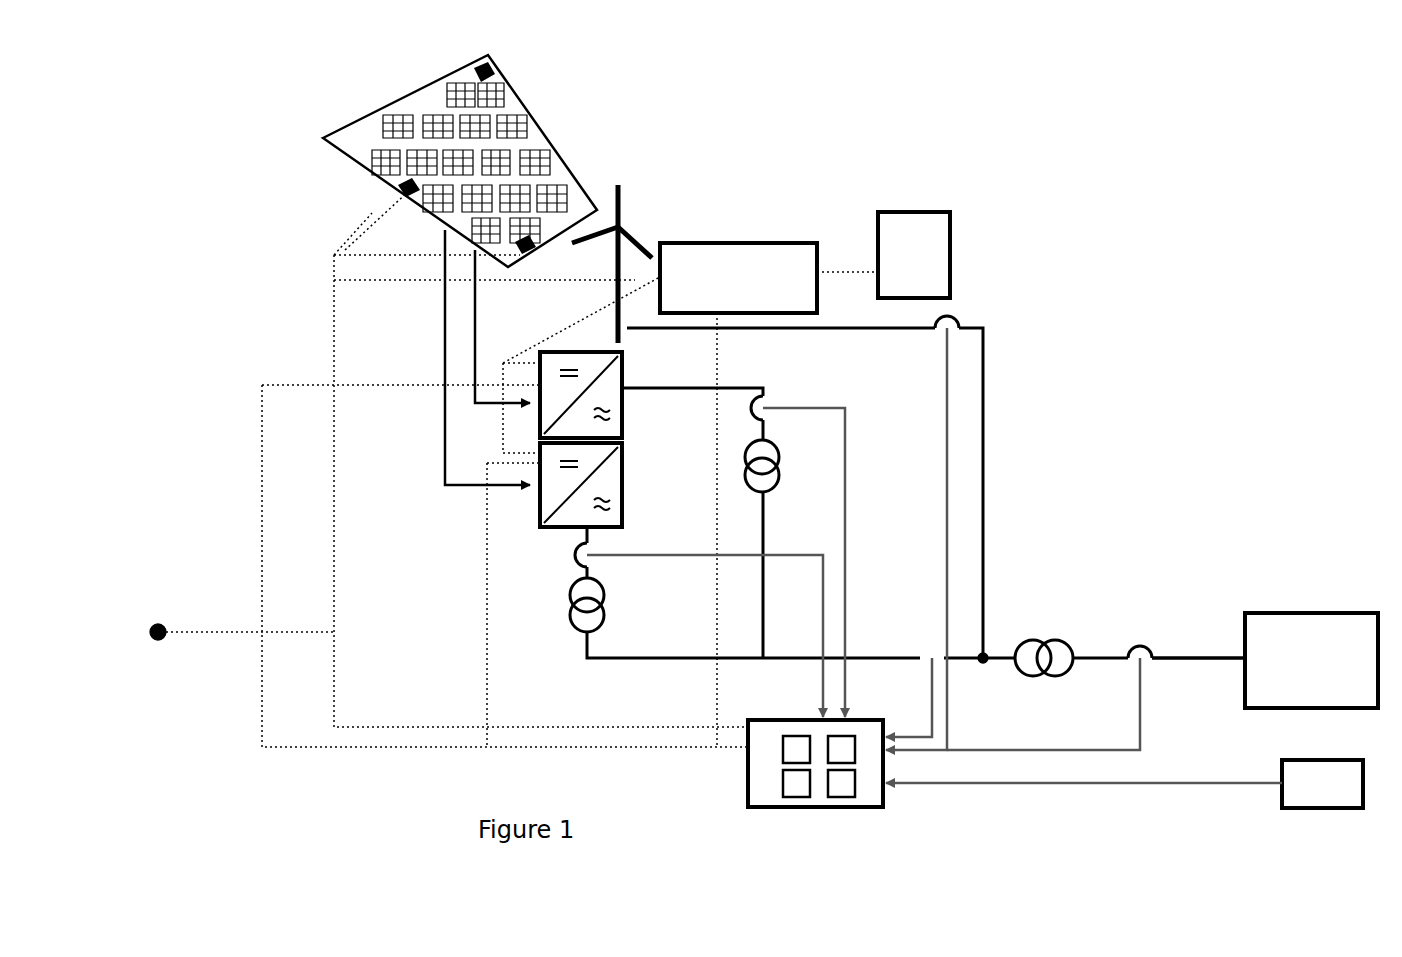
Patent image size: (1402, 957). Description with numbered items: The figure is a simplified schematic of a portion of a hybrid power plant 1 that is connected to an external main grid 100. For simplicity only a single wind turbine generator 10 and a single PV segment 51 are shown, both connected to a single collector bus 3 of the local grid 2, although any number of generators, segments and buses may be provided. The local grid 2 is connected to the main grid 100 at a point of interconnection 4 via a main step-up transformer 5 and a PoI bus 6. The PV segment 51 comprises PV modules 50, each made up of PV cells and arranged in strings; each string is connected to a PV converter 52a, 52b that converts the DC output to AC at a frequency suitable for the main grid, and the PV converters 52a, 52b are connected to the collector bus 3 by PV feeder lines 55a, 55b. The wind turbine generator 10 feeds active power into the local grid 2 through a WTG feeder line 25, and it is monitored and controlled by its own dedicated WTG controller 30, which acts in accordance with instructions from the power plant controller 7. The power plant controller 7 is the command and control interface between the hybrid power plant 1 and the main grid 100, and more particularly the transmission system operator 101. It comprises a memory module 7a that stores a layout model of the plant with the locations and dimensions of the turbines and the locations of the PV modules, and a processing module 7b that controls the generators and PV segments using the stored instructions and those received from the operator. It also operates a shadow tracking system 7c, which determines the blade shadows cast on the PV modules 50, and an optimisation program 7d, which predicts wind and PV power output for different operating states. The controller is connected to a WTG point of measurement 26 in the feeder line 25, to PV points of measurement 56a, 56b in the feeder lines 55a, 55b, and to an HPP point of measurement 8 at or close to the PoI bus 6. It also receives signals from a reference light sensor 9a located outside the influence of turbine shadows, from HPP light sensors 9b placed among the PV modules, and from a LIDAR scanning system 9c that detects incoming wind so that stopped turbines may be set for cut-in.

The hybrid power plant 1 is at (849, 135).
The local grid 2 is at (1002, 330).
The collector bus 3 is at (650, 662).
The point of interconnection 4 is at (1106, 610).
The main step-up transformer 5 is at (1036, 640).
The PoI bus 6 is at (1210, 655).
The power plant controller 7 is at (808, 820).
The memory module 7a is at (778, 752).
The processing module 7b is at (790, 795).
The shadow tracking system 7c is at (857, 752).
The optimisation program 7d is at (842, 795).
The HPP point of measurement 8 is at (1147, 645).
The reference light sensor 9a is at (155, 642).
The HPP light sensor 9b is at (490, 60).
The LIDAR scanning system 9c is at (914, 255).
The wind turbine generator 10 is at (630, 222).
The WTG feeder line 25 is at (985, 394).
The WTG point of measurement 26 is at (957, 315).
The WTG controller 30 is at (738, 278).
The PV module 50 is at (350, 148).
The PV segment 51 is at (555, 137).
The PV converter 52a is at (622, 487).
The PV converter 52b is at (622, 402).
The PV feeder line 55a is at (592, 530).
The PV feeder line 55b is at (733, 385).
The PV point of measurement 56a is at (568, 560).
The PV point of measurement 56b is at (772, 410).
The main grid 100 is at (1311, 660).
The transmission system operator 101 is at (1124, 784).